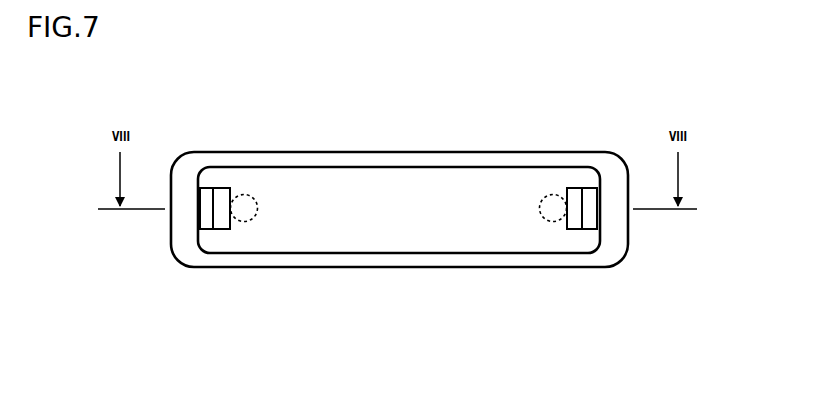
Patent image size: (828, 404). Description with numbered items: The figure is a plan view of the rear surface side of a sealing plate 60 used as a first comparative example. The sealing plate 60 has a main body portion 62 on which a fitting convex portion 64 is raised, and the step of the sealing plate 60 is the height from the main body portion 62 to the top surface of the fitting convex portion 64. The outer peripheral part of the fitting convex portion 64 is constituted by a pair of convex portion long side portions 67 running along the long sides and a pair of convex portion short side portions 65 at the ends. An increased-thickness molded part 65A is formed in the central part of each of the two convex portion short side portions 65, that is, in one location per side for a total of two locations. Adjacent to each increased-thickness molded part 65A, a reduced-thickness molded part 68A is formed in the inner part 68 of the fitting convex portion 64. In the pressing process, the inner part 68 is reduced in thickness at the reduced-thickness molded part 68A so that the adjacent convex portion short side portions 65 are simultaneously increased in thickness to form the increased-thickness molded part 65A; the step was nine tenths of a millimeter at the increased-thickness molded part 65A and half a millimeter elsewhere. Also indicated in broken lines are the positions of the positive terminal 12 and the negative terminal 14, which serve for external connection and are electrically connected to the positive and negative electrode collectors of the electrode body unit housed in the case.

The positive terminal 12 is at (240, 195).
The negative terminal 14 is at (543, 197).
The sealing plate 60 is at (574, 149).
The main body portion 62 is at (397, 163).
The fitting convex portion 64 is at (455, 165).
The convex portion short side portion 65 is at (200, 235).
The increased-thickness molded part 65A is at (205, 215).
The convex portion long side portion 67 is at (298, 167).
The inner part 68 is at (408, 208).
The reduced-thickness molded part 68A is at (229, 229).